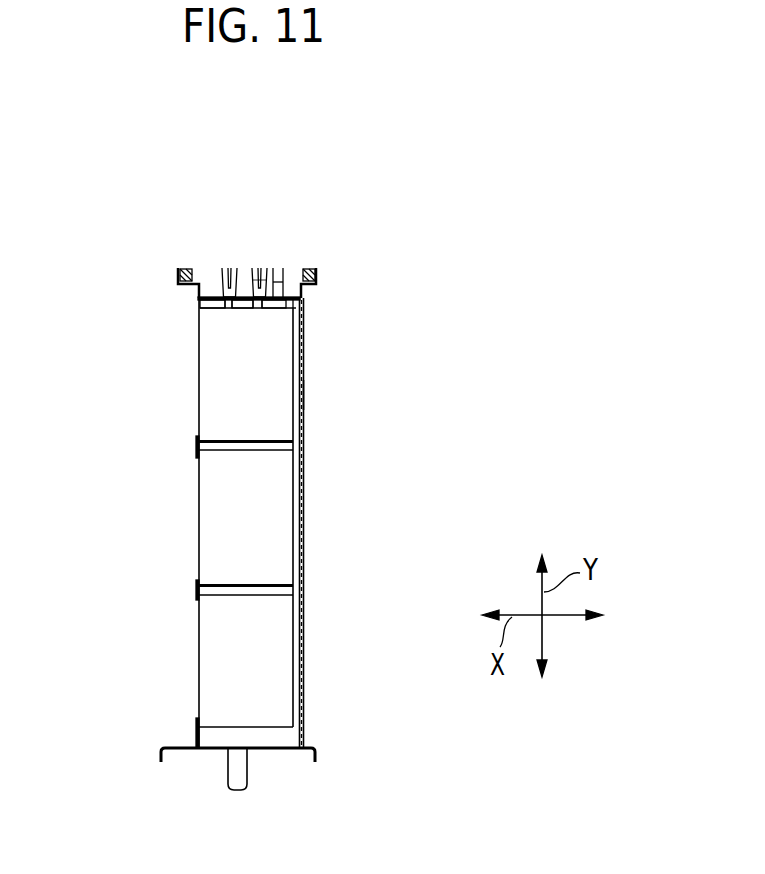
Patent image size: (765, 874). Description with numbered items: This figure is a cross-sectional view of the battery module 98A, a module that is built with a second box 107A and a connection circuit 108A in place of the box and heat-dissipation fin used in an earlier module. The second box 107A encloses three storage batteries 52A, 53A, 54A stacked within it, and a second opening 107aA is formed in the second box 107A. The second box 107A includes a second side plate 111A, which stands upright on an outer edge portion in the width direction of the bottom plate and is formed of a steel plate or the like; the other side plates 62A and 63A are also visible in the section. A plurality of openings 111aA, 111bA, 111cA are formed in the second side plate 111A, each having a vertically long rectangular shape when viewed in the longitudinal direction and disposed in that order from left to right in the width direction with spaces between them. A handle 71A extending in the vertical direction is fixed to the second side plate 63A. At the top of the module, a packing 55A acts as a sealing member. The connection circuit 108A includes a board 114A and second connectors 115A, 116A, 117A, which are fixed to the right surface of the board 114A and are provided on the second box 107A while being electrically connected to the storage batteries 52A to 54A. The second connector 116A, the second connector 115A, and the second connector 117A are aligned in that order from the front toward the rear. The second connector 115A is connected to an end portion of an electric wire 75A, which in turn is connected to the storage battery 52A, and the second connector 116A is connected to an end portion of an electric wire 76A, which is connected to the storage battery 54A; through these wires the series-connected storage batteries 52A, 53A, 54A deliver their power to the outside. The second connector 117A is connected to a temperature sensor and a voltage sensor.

The battery module 98A is at (103, 222).
The connection circuit 108A is at (377, 167).
The board 114A is at (212, 296).
The second connector 115A is at (255, 286).
The second connector 116A is at (221, 288).
The second connector 117A is at (281, 290).
The packing 55A is at (312, 271).
The second box 107A is at (320, 300).
The second opening 107aA is at (302, 310).
The second side plate 111A is at (197, 294).
The electric wire 76A is at (228, 305).
The electric wire 75A is at (258, 305).
The second side plate 62A is at (305, 395).
The storage battery 54A is at (285, 424).
The storage battery 53A is at (280, 528).
The storage battery 52A is at (280, 674).
The opening 111cA is at (198, 437).
The opening 111bA is at (198, 580).
The opening 111aA is at (198, 722).
The handle 71A is at (237, 784).
The second side plate 63A is at (285, 751).